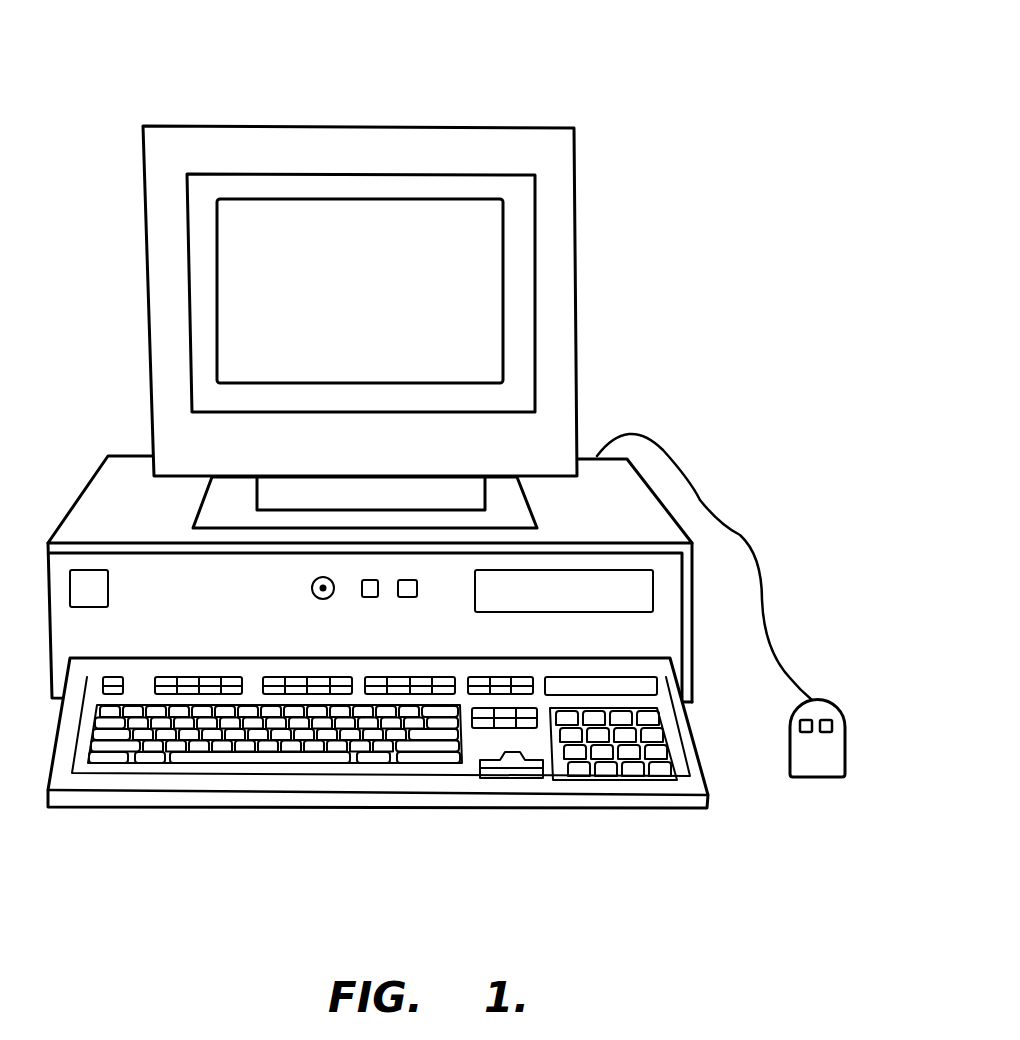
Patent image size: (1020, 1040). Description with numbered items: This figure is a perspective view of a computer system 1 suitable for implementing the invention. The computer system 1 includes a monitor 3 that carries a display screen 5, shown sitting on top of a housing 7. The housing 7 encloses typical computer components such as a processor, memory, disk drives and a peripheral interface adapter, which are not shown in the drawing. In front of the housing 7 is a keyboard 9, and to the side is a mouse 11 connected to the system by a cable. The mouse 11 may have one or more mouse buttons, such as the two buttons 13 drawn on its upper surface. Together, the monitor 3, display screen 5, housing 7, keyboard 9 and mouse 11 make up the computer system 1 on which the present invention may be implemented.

The computer system 1 is at (483, 478).
The monitor 3 is at (577, 262).
The display screen 5 is at (473, 252).
The housing 7 is at (610, 488).
The keyboard 9 is at (418, 810).
The mouse 11 is at (830, 760).
The mouse buttons 13 is at (807, 717).